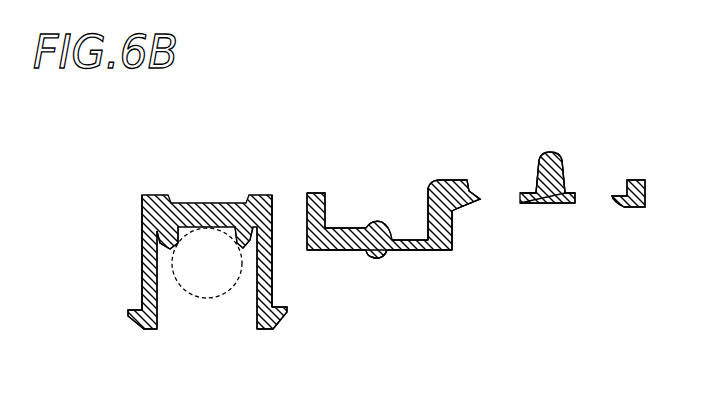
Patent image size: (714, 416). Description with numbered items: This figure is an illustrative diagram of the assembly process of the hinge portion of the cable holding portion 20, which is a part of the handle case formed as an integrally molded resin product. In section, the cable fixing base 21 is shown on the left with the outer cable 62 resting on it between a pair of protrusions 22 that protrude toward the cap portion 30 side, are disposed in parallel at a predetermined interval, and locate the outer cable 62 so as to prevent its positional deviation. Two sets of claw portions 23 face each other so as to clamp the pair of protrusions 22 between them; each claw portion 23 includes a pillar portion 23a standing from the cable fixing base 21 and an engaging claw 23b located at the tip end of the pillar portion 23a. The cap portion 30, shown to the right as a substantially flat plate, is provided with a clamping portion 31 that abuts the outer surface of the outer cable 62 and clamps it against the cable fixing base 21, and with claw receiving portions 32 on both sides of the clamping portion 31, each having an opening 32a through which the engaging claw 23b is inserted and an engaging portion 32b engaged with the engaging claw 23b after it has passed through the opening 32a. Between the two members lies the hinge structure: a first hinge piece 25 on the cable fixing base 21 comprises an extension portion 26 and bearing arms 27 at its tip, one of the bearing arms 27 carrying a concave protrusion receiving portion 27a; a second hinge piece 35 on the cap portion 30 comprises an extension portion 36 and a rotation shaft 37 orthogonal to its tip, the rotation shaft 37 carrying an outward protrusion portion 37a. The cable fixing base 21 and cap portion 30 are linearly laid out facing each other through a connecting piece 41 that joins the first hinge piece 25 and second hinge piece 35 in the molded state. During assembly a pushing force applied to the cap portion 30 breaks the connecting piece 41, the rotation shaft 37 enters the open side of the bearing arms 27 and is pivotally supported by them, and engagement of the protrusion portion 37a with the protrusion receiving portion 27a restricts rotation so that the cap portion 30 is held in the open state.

The cable holding portion 20 is at (432, 136).
The cable fixing base 21 is at (232, 197).
The protrusions 22 is at (239, 245).
The claw portion 23 is at (207, 252).
The pillar portion 23a is at (142, 250).
The engaging claw 23b is at (132, 320).
The first hinge piece 25 is at (373, 205).
The extension portion 26 is at (342, 227).
The bearing arms 27 is at (383, 230).
The protrusion receiving portion 27a is at (440, 219).
The cap portion 30 is at (552, 152).
The clamping portion 31 is at (550, 205).
The claw receiving portions 32 is at (513, 186).
The opening 32a is at (520, 205).
The engaging portion 32b is at (481, 197).
The second hinge piece 35 is at (426, 272).
The extension portion 36 is at (408, 252).
The rotation shaft 37 is at (373, 258).
The protrusion portion 37a is at (376, 254).
The connecting piece 41 is at (396, 236).
The outer cable 62 is at (188, 299).